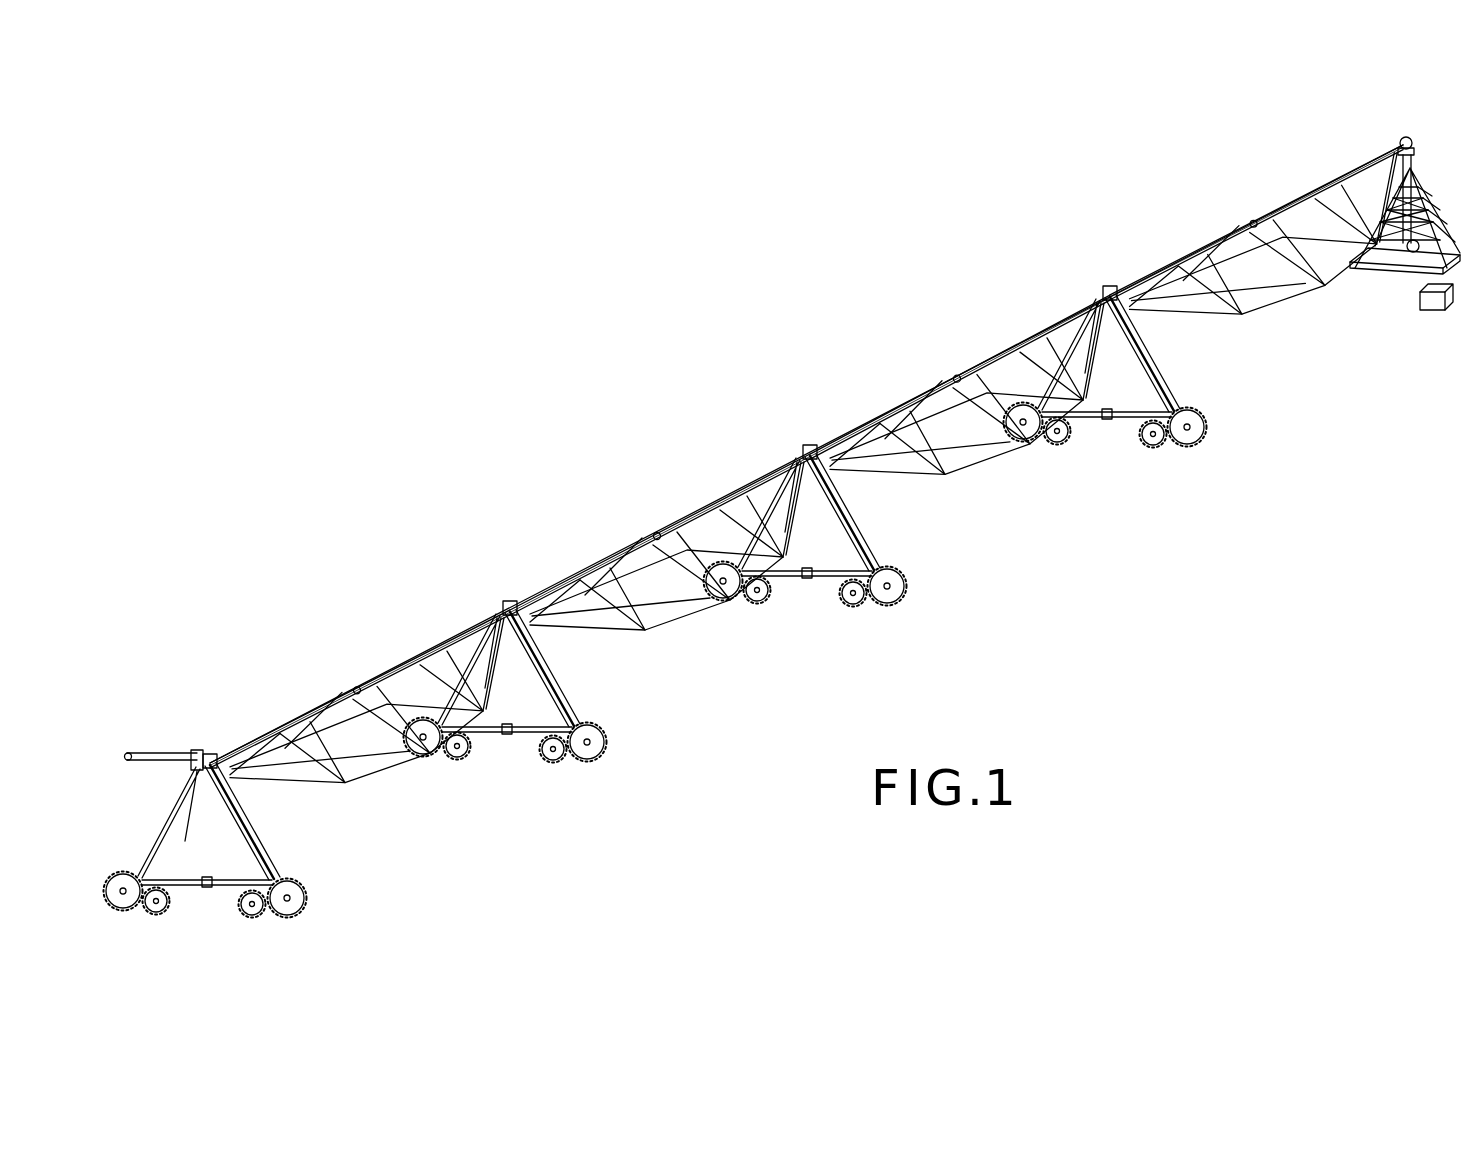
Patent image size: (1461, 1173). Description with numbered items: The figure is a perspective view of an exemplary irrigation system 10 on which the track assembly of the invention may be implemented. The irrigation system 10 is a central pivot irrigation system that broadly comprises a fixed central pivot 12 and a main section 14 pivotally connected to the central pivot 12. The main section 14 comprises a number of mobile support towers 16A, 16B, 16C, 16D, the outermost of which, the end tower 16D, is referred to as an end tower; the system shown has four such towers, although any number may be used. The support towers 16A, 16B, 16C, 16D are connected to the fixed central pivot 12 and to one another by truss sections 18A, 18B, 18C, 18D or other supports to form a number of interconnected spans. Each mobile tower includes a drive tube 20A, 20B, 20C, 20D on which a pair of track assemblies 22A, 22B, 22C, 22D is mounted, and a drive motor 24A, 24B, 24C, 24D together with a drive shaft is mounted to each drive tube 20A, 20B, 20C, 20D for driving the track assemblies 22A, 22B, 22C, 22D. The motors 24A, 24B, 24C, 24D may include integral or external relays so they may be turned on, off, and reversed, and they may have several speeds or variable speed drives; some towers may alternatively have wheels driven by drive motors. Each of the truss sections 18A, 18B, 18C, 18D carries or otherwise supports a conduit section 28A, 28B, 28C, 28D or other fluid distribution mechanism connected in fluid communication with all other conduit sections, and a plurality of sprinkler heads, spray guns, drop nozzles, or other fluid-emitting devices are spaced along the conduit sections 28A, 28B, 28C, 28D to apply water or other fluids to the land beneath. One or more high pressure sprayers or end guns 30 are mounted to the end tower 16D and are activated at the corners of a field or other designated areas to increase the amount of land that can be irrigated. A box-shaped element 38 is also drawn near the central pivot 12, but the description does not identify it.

The irrigation system 10 is at (783, 530).
The central pivot 12 is at (1443, 187).
The main section 14 is at (806, 451).
The mobile support tower 16A is at (1115, 268).
The mobile support tower 16B is at (820, 428).
The mobile support tower 16C is at (518, 586).
The end tower 16D is at (218, 742).
The truss section 18A is at (1237, 332).
The truss section 18B is at (960, 487).
The truss section 18C is at (655, 643).
The truss section 18D is at (382, 790).
The drive tube 20A is at (1133, 415).
The drive tube 20B is at (833, 574).
The drive tube 20C is at (533, 730).
The drive tube 20D is at (233, 886).
The track assemblies 22A is at (1198, 433).
The track assemblies 22B is at (898, 592).
The track assemblies 22C is at (598, 748).
The track assemblies 22D is at (298, 905).
The drive motor 24A is at (1110, 430).
The drive motor 24B is at (808, 588).
The drive motor 24C is at (508, 744).
The drive motor 24D is at (210, 897).
The conduit section 28A is at (1297, 190).
The conduit section 28B is at (1033, 335).
The conduit section 28C is at (697, 507).
The conduit section 28D is at (433, 645).
The end gun 30 is at (160, 753).
The control panel 38 is at (1427, 303).